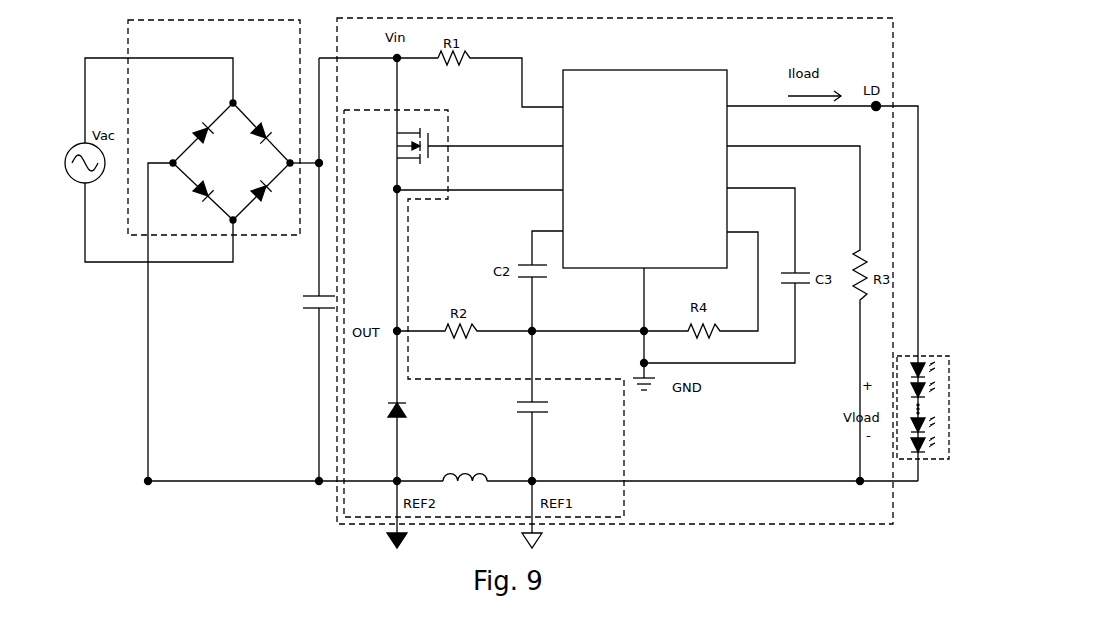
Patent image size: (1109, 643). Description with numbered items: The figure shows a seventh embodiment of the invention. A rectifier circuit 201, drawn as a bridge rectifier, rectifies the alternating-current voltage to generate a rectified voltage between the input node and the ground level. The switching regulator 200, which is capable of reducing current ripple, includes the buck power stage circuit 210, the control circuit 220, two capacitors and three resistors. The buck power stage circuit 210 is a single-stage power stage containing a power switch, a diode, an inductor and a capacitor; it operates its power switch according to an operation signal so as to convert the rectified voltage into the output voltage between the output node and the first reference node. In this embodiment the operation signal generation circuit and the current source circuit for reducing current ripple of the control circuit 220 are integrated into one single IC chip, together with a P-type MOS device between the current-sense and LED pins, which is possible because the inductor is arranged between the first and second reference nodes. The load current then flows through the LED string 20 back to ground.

The rectifier circuit 201 is at (214, 127).
The switching regulator 200 is at (615, 271).
The control circuit 220 is at (645, 169).
The buck power stage circuit 210 is at (484, 287).
The LED string 20 is at (927, 355).